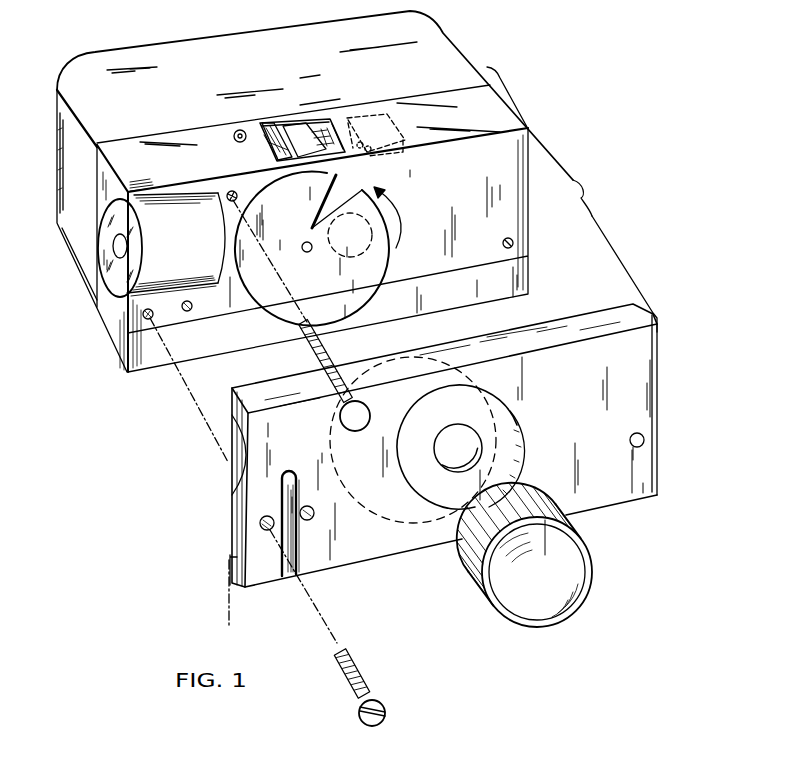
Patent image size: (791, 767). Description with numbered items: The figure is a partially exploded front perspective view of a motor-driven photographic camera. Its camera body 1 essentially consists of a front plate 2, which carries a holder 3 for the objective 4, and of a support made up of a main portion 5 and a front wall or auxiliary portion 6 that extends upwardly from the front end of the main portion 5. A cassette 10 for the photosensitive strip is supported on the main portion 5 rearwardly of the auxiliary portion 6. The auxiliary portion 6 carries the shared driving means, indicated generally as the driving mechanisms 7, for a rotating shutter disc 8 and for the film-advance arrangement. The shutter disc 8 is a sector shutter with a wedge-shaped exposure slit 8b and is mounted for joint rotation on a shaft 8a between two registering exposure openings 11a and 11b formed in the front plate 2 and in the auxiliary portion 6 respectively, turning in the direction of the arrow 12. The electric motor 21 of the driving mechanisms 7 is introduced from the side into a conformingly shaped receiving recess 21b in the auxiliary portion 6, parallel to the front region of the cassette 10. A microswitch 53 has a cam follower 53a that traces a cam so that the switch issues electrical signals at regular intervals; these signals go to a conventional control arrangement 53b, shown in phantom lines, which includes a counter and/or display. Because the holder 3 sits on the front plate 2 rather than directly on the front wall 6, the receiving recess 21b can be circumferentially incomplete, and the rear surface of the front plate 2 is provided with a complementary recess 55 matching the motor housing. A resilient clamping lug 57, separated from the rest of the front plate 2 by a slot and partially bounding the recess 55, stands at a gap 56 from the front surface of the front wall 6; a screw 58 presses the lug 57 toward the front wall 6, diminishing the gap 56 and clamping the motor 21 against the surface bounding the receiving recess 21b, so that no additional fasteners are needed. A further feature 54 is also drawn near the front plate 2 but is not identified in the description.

The camera body 1 is at (583, 195).
The cassette 10 is at (423, 36).
The main portion 5 is at (126, 350).
The auxiliary portion 6 is at (518, 217).
The driving mechanisms 7 is at (170, 289).
The electric motor 21 is at (125, 190).
The receiving recess 21b is at (112, 283).
The microswitch 53 is at (300, 133).
The cam follower 53a is at (272, 130).
The control arrangement 53b is at (372, 125).
The shutter disc 8 is at (358, 293).
The shaft 8a is at (309, 252).
The exposure slit 8b is at (348, 203).
The exposure opening 11b is at (368, 256).
The arrow 12 is at (393, 220).
The front plate 2 is at (648, 493).
The holder 3 is at (524, 465).
The exposure opening 11a is at (485, 445).
The objective 4 is at (590, 547).
The circular recess 54 is at (394, 517).
The complementary recess 55 is at (245, 454).
The gap 56 is at (227, 545).
The resilient clamping lug 57 is at (241, 590).
The screw 58 is at (362, 682).